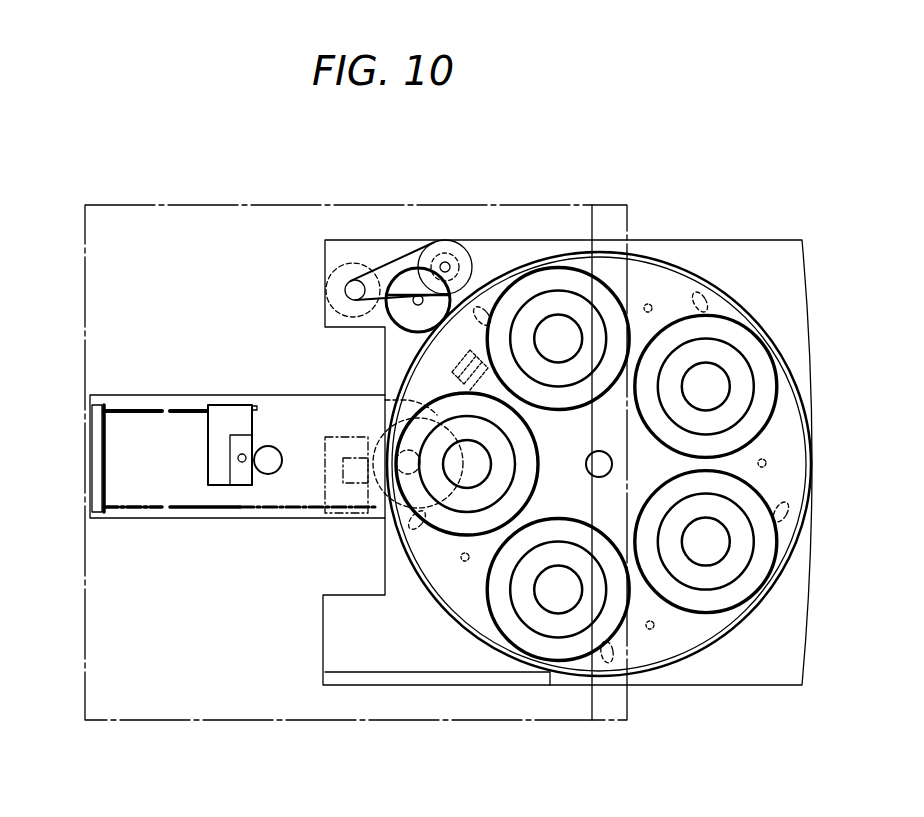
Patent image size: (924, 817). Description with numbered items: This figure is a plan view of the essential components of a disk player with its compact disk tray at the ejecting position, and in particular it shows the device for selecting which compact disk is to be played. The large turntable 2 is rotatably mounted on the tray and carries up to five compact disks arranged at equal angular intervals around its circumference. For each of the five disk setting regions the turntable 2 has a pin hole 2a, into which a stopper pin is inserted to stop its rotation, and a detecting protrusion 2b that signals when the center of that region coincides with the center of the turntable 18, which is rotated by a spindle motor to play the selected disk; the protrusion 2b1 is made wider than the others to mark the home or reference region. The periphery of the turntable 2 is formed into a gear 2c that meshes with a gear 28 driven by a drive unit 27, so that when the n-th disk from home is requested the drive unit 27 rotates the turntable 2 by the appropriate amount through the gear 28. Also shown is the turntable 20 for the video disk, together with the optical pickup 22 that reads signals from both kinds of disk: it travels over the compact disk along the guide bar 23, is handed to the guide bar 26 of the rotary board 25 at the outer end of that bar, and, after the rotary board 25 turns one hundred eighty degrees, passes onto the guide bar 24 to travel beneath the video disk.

The turntable 2 is at (778, 415).
The pin holes 2a is at (700, 300).
The detecting protrusions 2b is at (768, 463).
The protrusion 2b1 is at (488, 345).
The gear 2c is at (493, 283).
The turntable 18 is at (268, 446).
The turntable 20 is at (377, 432).
The optical pickup 22 is at (218, 458).
The guide bar 23 is at (184, 410).
The guide bar 24 is at (224, 510).
The rotary board 25 is at (95, 468).
The guide bar 26 is at (128, 410).
The drive unit 27 is at (352, 258).
The gear 28 is at (420, 268).